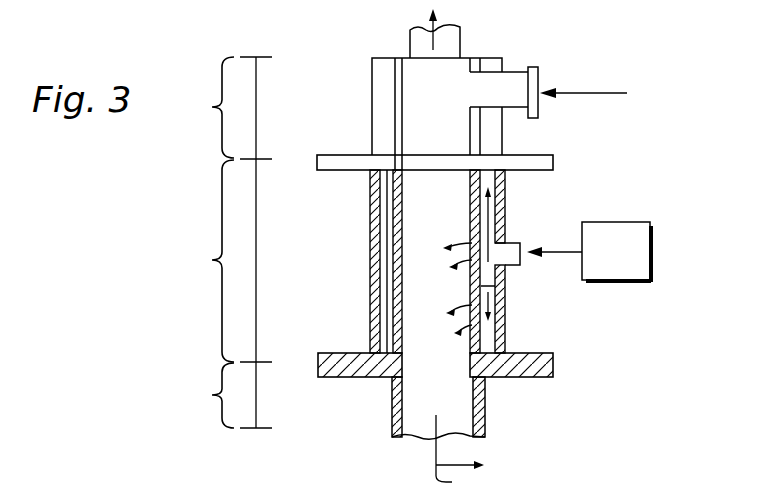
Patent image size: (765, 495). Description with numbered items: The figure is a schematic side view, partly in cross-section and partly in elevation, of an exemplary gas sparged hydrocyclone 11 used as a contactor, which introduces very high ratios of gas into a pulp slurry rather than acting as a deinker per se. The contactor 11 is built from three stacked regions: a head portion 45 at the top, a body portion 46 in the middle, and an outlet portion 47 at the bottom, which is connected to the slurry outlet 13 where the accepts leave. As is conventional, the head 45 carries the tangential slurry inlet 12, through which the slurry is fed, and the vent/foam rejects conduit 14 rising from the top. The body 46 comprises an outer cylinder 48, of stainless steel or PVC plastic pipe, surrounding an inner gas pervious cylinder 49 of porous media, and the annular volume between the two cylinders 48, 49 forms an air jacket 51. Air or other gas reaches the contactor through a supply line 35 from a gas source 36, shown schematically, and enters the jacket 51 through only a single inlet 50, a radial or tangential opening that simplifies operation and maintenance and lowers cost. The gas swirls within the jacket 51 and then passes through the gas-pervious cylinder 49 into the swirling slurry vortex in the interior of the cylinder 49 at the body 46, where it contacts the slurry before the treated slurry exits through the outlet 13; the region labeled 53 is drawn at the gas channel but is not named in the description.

The gas sparged hydrocyclone 11 is at (327, 273).
The tangential slurry inlet 12 is at (505, 78).
The slurry outlet 13 is at (487, 436).
The vent/foam rejects conduit 14 is at (410, 37).
The gas supply line 35 is at (563, 257).
The source of gas 36 is at (652, 276).
The head portion 45 is at (202, 107).
The body portion 46 is at (202, 261).
The outlet portion 47 is at (202, 395).
The outer cylinder 48 is at (370, 208).
The inner gas pervious cylinder 49 is at (400, 292).
The single inlet 50 is at (495, 234).
The air jacket 51 is at (377, 340).
The air channel 53 is at (500, 215).